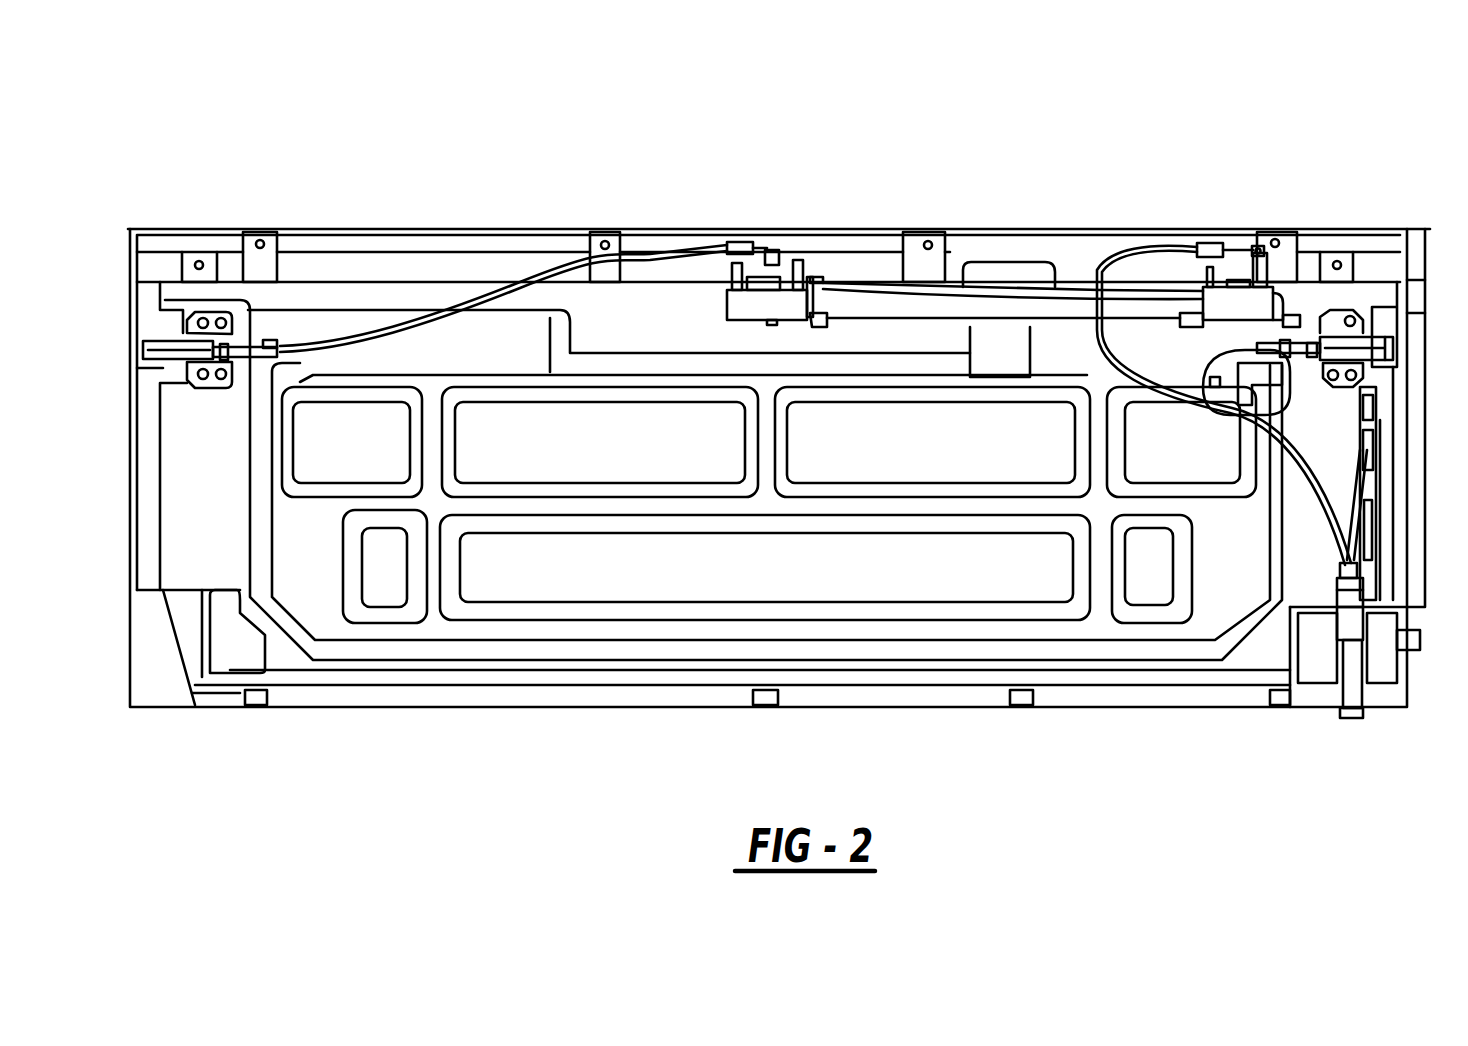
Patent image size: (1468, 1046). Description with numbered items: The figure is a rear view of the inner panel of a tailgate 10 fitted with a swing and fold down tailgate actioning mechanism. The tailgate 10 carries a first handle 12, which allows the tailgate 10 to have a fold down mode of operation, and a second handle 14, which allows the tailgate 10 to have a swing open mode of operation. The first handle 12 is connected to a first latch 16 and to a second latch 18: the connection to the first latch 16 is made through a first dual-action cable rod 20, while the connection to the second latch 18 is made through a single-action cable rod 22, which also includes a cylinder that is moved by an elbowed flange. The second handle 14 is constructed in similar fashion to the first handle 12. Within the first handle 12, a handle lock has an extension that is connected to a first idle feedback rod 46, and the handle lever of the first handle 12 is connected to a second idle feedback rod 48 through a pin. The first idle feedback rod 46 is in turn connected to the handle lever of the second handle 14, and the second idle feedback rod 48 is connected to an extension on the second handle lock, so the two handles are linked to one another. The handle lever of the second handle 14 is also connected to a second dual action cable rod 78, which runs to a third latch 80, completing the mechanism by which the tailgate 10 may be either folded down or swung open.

The tailgate 10 is at (631, 108).
The first handle 12 is at (799, 210).
The second handle 14 is at (1266, 230).
The first latch 16 is at (1377, 229).
The second latch 18 is at (163, 345).
The first dual-action cable rod 20 is at (417, 228).
The single-action cable rod 22 is at (1000, 330).
The first idle feedback rod 46 is at (895, 286).
The second idle feedback rod 48 is at (1190, 248).
The second dual action cable rod 78 is at (1120, 284).
The third latch 80 is at (1352, 680).